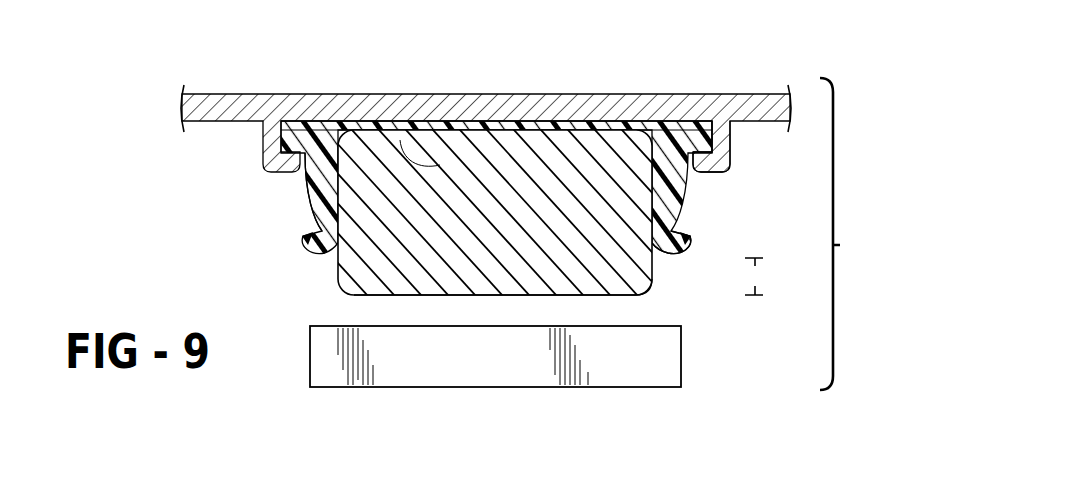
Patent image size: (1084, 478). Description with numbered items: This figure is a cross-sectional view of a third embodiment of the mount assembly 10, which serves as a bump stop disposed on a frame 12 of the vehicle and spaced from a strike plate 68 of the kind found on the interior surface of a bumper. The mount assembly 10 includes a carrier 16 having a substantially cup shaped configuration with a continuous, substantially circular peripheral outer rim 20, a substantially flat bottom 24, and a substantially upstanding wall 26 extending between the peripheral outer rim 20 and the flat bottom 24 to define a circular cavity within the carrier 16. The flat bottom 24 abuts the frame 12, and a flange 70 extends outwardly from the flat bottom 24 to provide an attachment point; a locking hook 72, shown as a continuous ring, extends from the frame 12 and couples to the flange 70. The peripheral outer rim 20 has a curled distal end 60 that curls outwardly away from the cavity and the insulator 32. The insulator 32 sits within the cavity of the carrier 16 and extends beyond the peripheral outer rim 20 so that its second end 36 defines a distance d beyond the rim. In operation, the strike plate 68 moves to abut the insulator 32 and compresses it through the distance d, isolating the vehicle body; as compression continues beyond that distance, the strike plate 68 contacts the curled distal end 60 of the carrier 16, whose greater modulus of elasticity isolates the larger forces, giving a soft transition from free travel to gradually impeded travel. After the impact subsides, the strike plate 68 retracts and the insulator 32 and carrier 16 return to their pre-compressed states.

The mount assembly 10 is at (203, 182).
The frame 12 is at (572, 105).
The carrier 16 is at (690, 192).
The peripheral outer rim 20 is at (322, 251).
The flat bottom 24 is at (454, 127).
The upstanding wall 26 is at (300, 180).
The insulator 32 is at (651, 284).
The second end 36 is at (545, 292).
The curled distal end 60 is at (683, 241).
The strike plate 68 is at (475, 360).
The flange 70 is at (666, 128).
The locking hook 72 is at (725, 160).